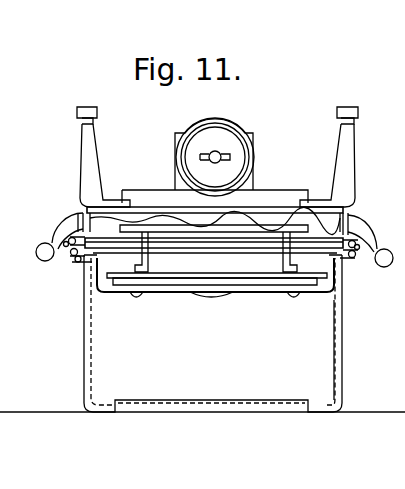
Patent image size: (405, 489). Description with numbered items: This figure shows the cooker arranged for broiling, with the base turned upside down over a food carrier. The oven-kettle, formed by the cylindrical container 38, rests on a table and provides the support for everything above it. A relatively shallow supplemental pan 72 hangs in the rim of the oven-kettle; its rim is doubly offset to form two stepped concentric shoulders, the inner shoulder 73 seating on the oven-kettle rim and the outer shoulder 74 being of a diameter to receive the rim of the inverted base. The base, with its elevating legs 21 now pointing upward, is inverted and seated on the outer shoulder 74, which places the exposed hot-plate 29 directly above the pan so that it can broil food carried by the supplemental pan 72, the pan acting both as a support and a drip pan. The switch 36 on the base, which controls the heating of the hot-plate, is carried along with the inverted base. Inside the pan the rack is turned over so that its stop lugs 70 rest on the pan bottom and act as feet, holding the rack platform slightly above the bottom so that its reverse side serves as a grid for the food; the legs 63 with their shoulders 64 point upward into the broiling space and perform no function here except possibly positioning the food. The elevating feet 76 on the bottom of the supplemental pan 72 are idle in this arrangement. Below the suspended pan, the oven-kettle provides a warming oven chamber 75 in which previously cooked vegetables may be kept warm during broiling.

The elevating legs 21 is at (341, 145).
The hot-plate 29 is at (268, 225).
The switch 36 is at (178, 153).
The cylindrical container 38 is at (339, 339).
The legs 63 is at (290, 260).
The shoulders 64 is at (150, 270).
The stop lugs 70 is at (320, 288).
The supplemental pan 72 is at (108, 293).
The inner shoulder 73 is at (82, 265).
The outer shoulder 74 is at (70, 253).
The warming oven chamber 75 is at (107, 373).
The elevating feet 76 is at (138, 299).